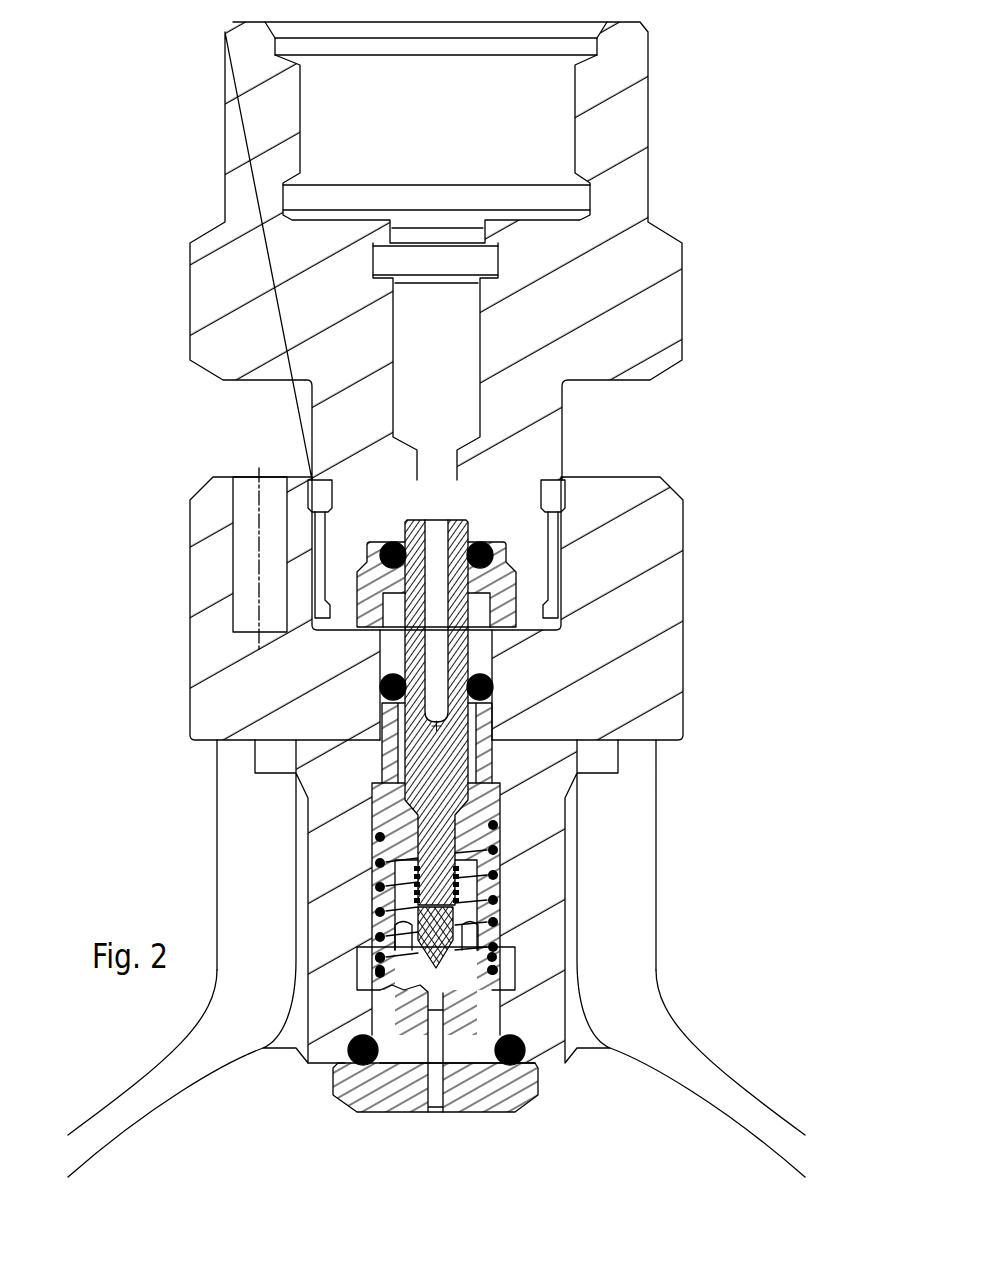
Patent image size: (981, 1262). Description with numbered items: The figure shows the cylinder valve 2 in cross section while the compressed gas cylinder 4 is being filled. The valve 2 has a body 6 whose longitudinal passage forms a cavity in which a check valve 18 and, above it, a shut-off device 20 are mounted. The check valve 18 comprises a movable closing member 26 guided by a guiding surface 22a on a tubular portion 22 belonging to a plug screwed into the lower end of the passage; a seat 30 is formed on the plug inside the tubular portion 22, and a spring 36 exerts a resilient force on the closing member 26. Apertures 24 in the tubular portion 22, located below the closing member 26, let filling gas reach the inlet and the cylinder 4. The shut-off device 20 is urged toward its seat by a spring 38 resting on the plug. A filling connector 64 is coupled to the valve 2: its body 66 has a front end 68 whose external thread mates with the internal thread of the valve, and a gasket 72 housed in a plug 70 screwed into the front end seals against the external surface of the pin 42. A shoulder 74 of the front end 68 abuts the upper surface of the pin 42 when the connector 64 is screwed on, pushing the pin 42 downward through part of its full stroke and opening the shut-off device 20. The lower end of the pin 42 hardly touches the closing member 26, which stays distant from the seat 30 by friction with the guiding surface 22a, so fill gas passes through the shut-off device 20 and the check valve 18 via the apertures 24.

The valve 2 is at (97, 518).
The compressed gas cylinder 4 is at (752, 1113).
The body 6 is at (663, 672).
The check valve 18 is at (290, 910).
The shut-off device 20 is at (358, 683).
The tubular portion 22 is at (477, 928).
The guiding surface 22a is at (405, 940).
The apertures 24 is at (480, 976).
The movable closing member 26 is at (410, 938).
The seat 30 is at (420, 987).
The spring 36 is at (460, 877).
The spring 38 is at (497, 853).
The pin 42 is at (463, 643).
The filling connector 64 is at (83, 230).
The body 66 is at (663, 330).
The front end 68 is at (525, 545).
The plug 70 is at (500, 608).
The gasket 72 is at (473, 538).
The shoulder 74 is at (413, 519).